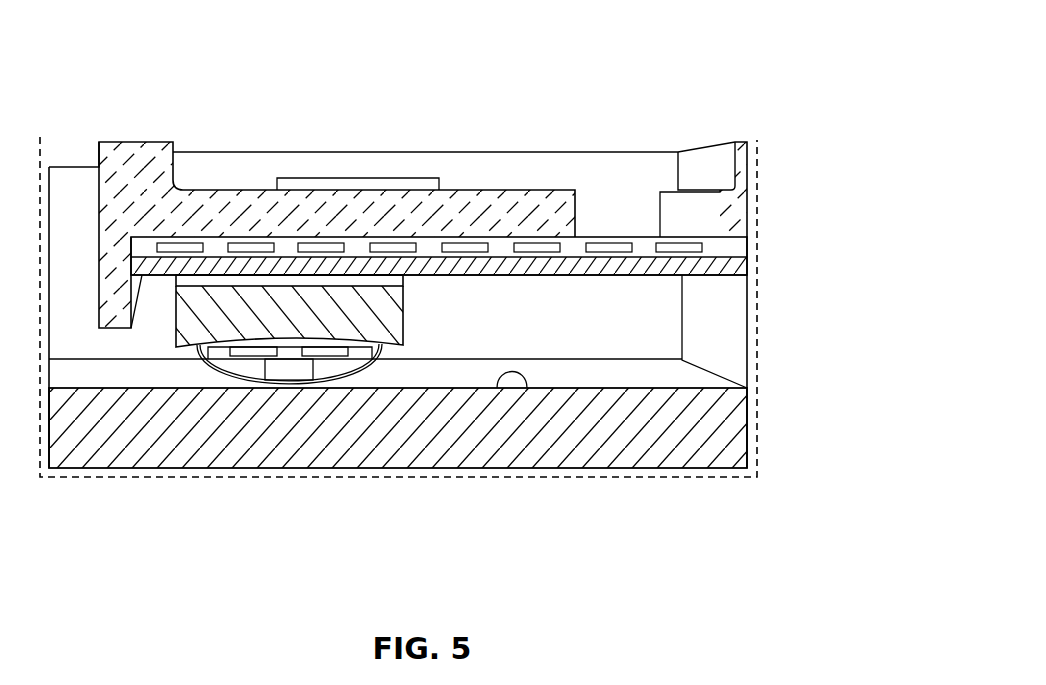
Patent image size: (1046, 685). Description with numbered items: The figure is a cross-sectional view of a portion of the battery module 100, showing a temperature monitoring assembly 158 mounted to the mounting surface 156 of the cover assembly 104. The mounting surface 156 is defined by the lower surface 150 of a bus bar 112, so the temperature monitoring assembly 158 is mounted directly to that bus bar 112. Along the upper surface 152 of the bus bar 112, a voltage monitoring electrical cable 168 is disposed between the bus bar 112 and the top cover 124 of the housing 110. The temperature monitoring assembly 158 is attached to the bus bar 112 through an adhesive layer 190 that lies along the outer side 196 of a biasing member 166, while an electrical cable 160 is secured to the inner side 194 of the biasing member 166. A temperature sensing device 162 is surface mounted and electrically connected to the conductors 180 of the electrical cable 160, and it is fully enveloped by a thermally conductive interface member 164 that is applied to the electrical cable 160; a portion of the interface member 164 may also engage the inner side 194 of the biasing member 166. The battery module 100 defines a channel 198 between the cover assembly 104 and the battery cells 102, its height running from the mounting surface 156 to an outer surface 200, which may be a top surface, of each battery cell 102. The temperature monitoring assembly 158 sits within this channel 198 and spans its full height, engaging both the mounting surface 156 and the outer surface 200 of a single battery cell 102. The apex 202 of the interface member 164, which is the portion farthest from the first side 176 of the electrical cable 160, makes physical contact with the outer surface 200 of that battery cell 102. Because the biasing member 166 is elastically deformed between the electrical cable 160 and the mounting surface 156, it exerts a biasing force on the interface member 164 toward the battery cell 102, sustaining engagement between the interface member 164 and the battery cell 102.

The battery module 100 is at (722, 62).
The battery cells 102 is at (683, 455).
The cover assembly 104 is at (773, 212).
The housing 110 is at (472, 197).
The bus bar 112 is at (580, 267).
The top cover 124 is at (357, 198).
The lower surface 150 is at (663, 270).
The upper surface 152 is at (638, 258).
The mounting surface 156 is at (622, 285).
The temperature monitoring assembly 158 is at (415, 353).
The electrical cable 160 is at (357, 350).
The temperature sensing device 162 is at (297, 372).
The thermally conductive interface member 164 is at (316, 372).
The biasing member 166 is at (213, 303).
The voltage monitoring electrical cable 168 is at (502, 245).
The first side 176 is at (223, 357).
The conductors 180 is at (248, 352).
The adhesive layer 190 is at (233, 282).
The inner side 194 is at (380, 285).
The outer side 196 is at (306, 285).
The channel 198 is at (545, 348).
The outer surface 200 is at (544, 375).
The apex 202 is at (278, 386).